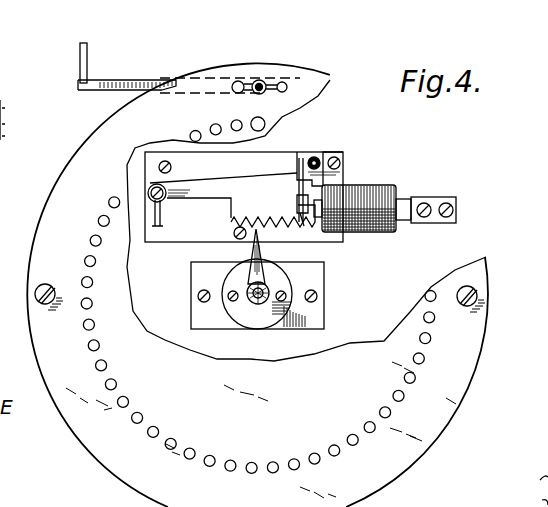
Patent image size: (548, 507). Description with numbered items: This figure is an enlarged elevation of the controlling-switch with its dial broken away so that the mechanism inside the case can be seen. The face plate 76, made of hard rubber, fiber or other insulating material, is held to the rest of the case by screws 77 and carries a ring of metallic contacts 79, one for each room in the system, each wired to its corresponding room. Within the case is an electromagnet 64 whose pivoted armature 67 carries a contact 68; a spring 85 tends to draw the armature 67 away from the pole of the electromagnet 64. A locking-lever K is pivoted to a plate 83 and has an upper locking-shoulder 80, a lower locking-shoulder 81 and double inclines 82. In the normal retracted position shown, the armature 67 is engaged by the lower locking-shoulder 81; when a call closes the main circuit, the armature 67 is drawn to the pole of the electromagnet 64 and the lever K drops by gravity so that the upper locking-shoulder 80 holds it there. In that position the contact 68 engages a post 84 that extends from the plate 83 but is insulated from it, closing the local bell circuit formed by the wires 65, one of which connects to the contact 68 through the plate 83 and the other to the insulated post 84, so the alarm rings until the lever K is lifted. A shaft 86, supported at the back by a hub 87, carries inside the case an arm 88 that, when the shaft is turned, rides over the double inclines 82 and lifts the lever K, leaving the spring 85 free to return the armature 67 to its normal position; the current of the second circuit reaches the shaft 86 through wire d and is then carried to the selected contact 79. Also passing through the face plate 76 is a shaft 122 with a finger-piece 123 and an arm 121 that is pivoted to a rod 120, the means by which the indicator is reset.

The face plate 76 is at (439, 424).
The screws 77 is at (0, 298).
The metallic contacts 79 is at (96, 344).
The rod 120 is at (87, 67).
The arm 121 is at (143, 83).
The shaft 122 is at (261, 80).
The finger-piece 123 is at (285, 82).
The plate 83 is at (168, 235).
The locking-lever K is at (222, 174).
The lower locking-shoulder 81 is at (297, 197).
The spring 85 is at (216, 214).
The double inclines 82 is at (257, 218).
The contact 68 is at (300, 165).
The post 84 is at (318, 163).
The wires 65 is at (319, 159).
The upper locking-shoulder 80 is at (340, 175).
The electromagnet 64 is at (393, 188).
The armature 67 is at (304, 222).
The shaft 86 is at (238, 322).
The arm 88 is at (277, 277).
The hub 87 is at (240, 304).
The wire d is at (200, 293).